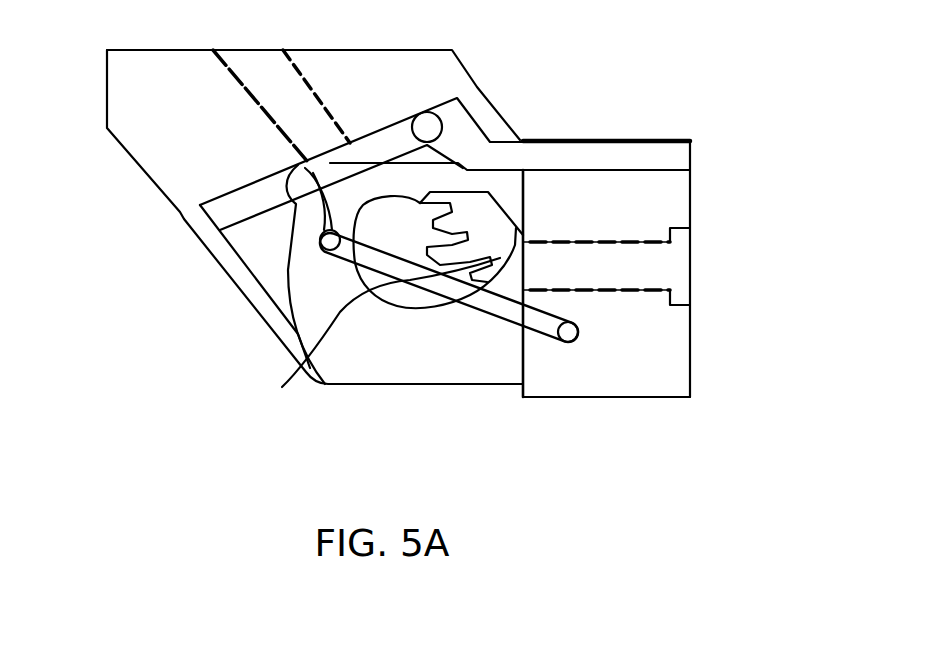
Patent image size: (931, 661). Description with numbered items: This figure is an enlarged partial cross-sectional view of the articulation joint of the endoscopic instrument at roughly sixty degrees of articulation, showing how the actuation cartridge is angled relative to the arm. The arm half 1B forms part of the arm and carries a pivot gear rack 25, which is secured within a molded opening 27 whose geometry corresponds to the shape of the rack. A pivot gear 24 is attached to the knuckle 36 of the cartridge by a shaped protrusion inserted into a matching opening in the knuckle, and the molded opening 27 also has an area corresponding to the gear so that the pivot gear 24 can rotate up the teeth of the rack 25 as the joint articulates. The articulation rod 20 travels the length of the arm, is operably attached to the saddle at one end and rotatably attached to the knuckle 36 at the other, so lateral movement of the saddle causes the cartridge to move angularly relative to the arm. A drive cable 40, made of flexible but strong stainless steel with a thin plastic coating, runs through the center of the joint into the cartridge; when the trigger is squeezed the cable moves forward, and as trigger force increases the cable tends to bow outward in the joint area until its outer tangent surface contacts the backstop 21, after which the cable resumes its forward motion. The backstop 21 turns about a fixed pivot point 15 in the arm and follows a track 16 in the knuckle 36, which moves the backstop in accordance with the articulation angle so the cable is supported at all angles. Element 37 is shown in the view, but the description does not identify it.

The arm half 1B is at (647, 353).
The fixed pivot point 15 is at (577, 338).
The track 16 is at (327, 162).
The articulation rod 20 is at (637, 157).
The backstop 21 is at (508, 308).
The pivot gear 24 is at (380, 223).
The pivot gear rack 25 is at (492, 222).
The molded opening 27 is at (282, 387).
The knuckle 36 is at (487, 122).
The wall 37 is at (523, 197).
The drive cable 40 is at (653, 270).